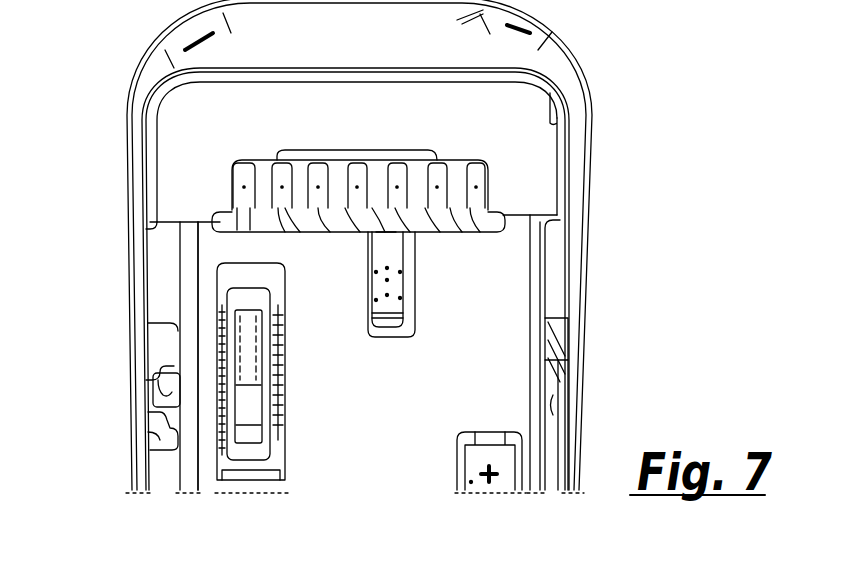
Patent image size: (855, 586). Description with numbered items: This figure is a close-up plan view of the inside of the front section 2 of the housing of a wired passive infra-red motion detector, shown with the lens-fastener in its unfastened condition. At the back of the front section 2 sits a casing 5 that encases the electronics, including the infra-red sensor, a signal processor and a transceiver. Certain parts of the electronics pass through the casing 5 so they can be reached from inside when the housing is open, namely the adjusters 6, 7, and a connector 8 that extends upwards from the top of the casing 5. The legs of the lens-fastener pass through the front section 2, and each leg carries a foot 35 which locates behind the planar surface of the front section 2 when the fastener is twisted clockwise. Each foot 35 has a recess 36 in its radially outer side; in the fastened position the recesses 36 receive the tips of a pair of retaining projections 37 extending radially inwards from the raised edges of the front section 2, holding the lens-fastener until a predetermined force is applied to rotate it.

The front section 2 is at (390, 412).
The casing 5 is at (208, 477).
The adjuster 6 is at (254, 440).
The adjuster 7 is at (502, 460).
The connector 8 is at (478, 191).
The foot 35 is at (168, 376).
The recess 36 is at (160, 392).
The retaining projection 37 is at (152, 416).